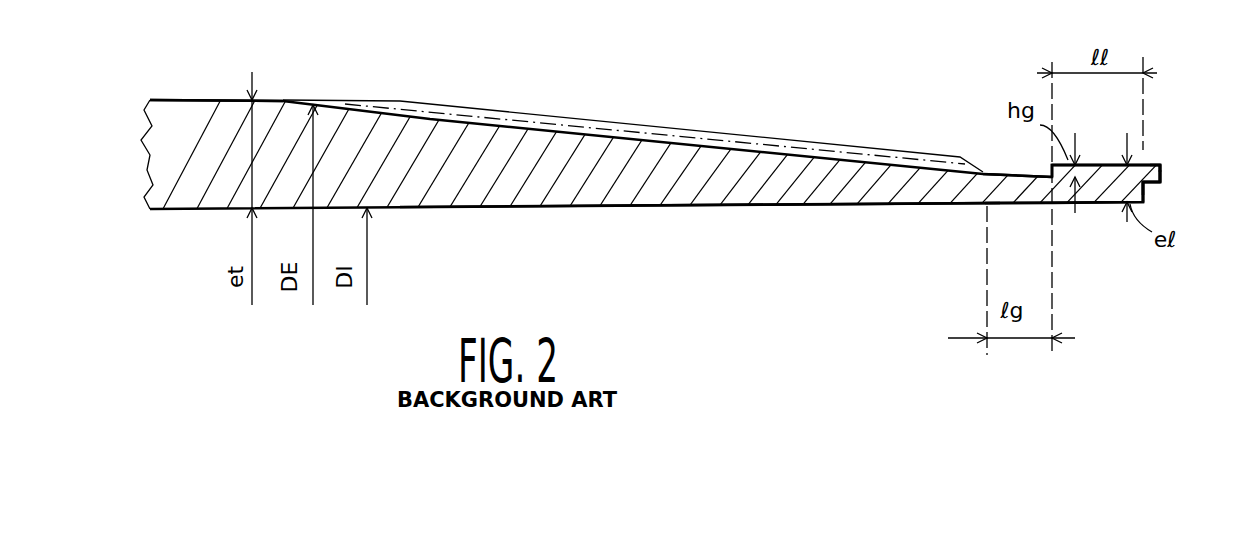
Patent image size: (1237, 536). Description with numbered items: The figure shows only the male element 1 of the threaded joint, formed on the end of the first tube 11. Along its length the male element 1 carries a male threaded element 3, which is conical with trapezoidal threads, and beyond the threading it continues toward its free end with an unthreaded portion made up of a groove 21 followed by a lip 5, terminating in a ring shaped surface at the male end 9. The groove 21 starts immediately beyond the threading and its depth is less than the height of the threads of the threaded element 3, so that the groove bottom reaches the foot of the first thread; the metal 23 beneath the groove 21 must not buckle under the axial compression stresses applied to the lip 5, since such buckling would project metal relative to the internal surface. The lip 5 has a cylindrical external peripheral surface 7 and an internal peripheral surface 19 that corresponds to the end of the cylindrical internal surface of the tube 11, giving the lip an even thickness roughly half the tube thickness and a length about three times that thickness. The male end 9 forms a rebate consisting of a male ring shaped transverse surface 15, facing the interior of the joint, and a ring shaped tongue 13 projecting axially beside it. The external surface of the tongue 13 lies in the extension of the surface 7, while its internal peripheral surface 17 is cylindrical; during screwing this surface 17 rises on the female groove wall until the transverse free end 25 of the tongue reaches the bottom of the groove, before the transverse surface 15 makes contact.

The male element 1 is at (713, 118).
The male threaded element 3 is at (536, 125).
The lip 5 is at (1097, 187).
The external peripheral surface 7 is at (1103, 165).
The male end 9 is at (1163, 176).
The first tube 11 is at (185, 117).
The ring shaped tongue 13 is at (1152, 166).
The male ring shaped transverse surface 15 is at (1140, 205).
The internal peripheral surface of the tongue 17 is at (1147, 186).
The internal peripheral surface 19 is at (767, 204).
The groove 21 is at (1007, 173).
The metal beneath the groove 23 is at (997, 203).
The transverse free end of the tongue 25 is at (1162, 178).